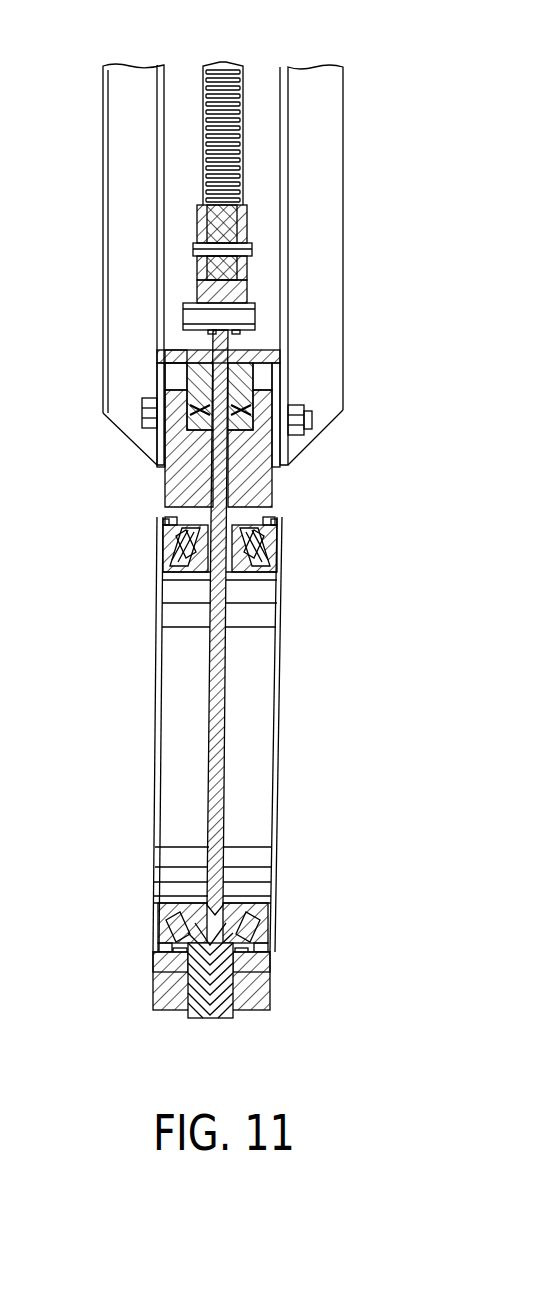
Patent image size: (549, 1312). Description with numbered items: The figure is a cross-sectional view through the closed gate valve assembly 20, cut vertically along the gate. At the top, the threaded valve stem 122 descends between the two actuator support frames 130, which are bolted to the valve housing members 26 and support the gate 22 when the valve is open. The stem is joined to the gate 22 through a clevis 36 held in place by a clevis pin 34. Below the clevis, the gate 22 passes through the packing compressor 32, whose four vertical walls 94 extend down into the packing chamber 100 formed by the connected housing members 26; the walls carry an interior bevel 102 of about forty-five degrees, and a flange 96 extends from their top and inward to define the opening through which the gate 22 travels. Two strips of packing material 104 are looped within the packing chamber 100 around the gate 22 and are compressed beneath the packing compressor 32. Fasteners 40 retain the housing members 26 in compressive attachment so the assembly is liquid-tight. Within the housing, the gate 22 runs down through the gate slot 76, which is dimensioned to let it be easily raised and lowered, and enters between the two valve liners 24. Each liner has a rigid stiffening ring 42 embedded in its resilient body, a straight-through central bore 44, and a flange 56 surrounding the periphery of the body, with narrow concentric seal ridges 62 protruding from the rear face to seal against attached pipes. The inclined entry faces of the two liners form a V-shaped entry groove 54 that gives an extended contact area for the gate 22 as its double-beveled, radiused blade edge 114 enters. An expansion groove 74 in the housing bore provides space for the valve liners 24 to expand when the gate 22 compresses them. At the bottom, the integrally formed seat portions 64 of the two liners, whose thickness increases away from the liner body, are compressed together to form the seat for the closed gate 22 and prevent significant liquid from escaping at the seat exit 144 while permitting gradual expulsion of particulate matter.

The gate valve assembly 20 is at (76, 216).
The gate 22 is at (228, 700).
The valve liner 24 is at (153, 802).
The valve housing member 26 is at (155, 980).
The packing compressor 32 is at (278, 350).
The clevis pin 34 is at (183, 300).
The clevis 36 is at (255, 300).
The fastener 40 is at (150, 412).
The stiffening ring 42 is at (165, 583).
The central bore 44 is at (195, 577).
The entry groove 54 is at (280, 503).
The flange 56 is at (165, 535).
The seal ridge 62 is at (165, 540).
The seat portion 64 is at (193, 1013).
The expansion groove 74 is at (165, 520).
The gate slot 76 is at (275, 497).
The vertical wall 94 is at (185, 385).
The flange 96 is at (190, 352).
The packing chamber 100 is at (285, 455).
The interior bevel 102 is at (162, 470).
The packing material 104 is at (262, 410).
The blade edge 114 is at (278, 900).
The threaded valve stem 122 is at (203, 103).
The actuator support frame 130 is at (105, 143).
The seat exit 144 is at (215, 1013).